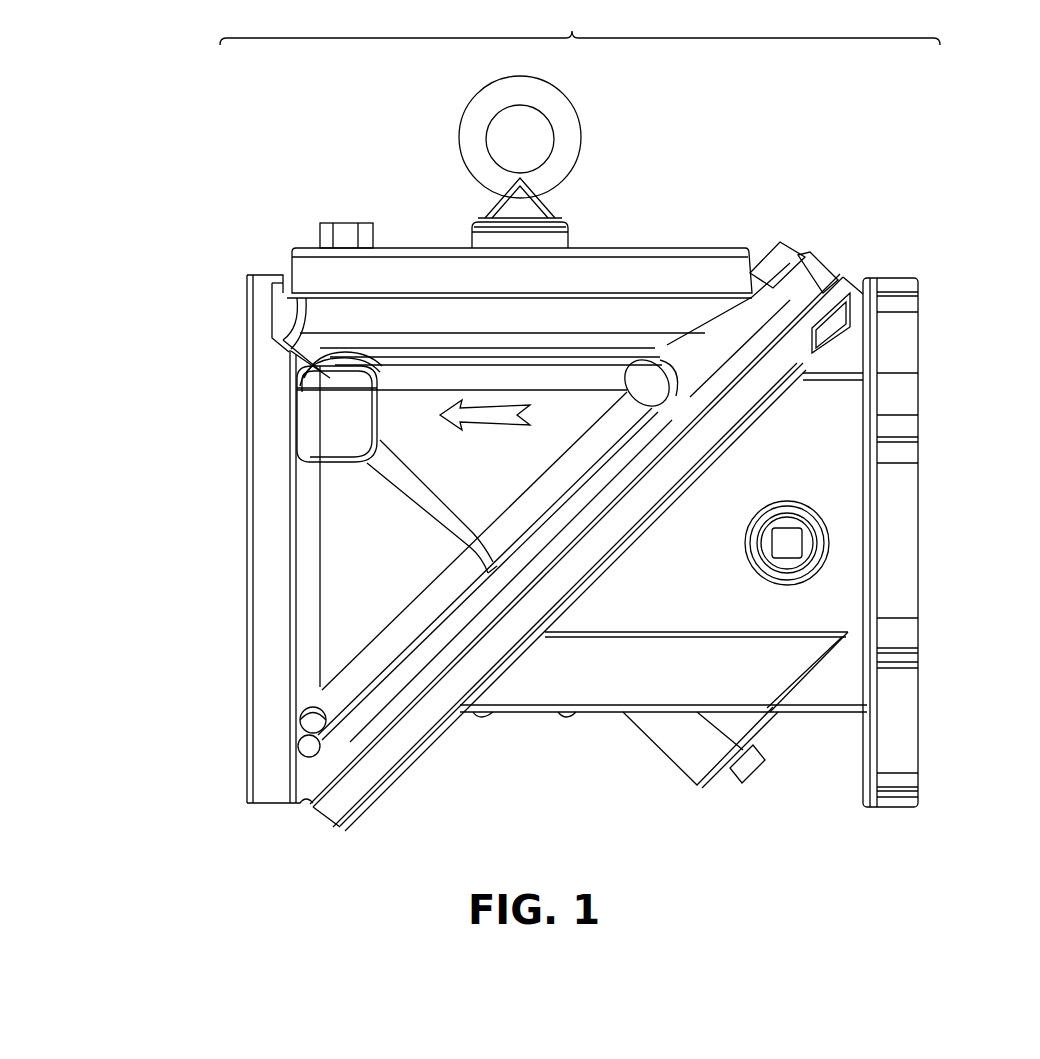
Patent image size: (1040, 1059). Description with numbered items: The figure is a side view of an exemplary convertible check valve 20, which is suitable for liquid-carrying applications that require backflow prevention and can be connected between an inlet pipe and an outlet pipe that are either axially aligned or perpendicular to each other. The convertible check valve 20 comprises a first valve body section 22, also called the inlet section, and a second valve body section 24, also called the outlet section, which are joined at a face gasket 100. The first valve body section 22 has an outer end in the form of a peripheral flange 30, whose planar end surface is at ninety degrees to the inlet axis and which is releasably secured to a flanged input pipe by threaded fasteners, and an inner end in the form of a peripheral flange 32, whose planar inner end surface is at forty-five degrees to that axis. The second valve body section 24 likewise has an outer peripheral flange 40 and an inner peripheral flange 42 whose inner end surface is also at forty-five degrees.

The convertible check valve 20 is at (580, 25).
The first valve body section 22 is at (580, 773).
The second valve body section 24 is at (284, 202).
The peripheral flange 30 is at (903, 803).
The peripheral flange 32 is at (318, 815).
The peripheral flange 40 is at (272, 800).
The peripheral flange 42 is at (830, 262).
The face gasket 100 is at (846, 262).